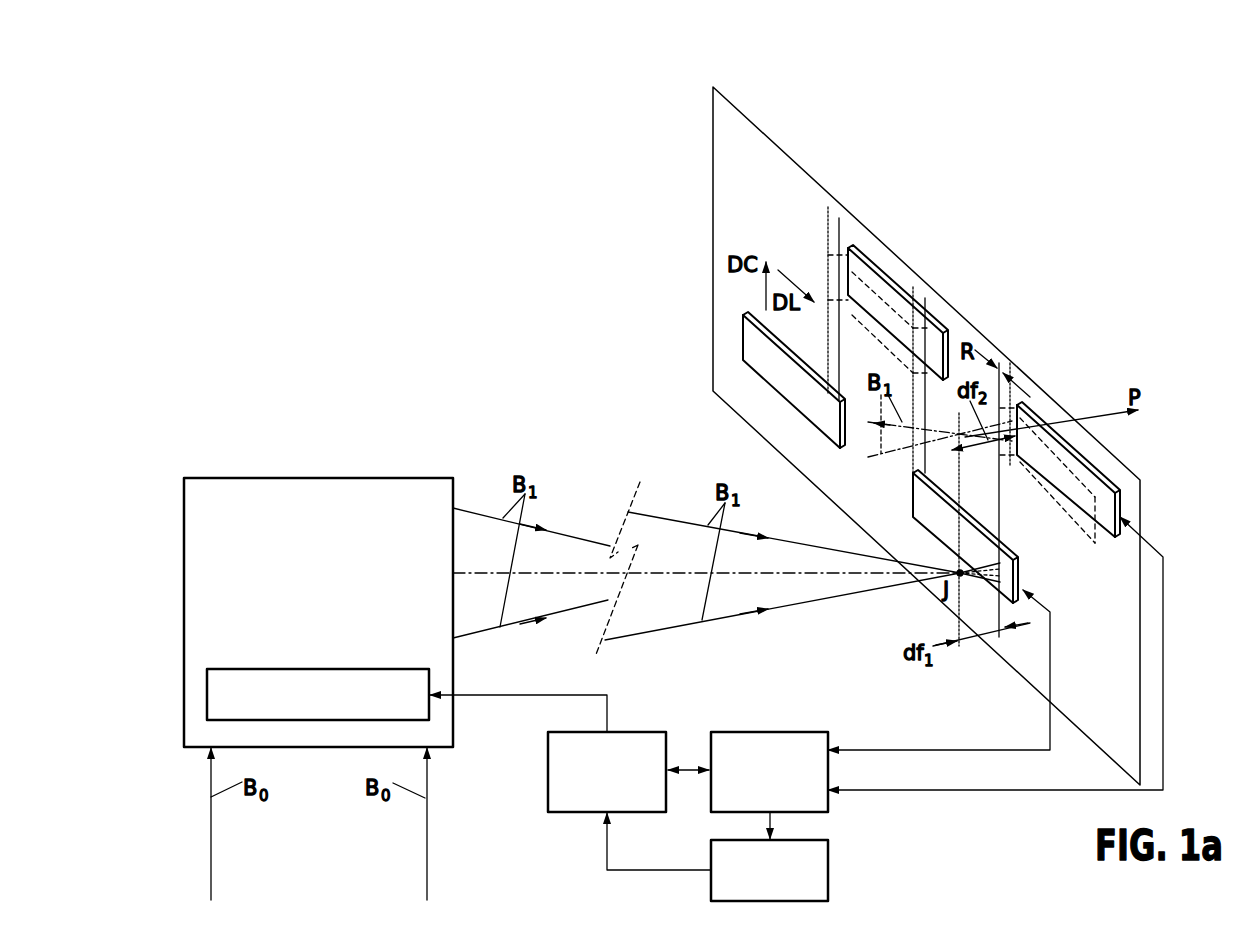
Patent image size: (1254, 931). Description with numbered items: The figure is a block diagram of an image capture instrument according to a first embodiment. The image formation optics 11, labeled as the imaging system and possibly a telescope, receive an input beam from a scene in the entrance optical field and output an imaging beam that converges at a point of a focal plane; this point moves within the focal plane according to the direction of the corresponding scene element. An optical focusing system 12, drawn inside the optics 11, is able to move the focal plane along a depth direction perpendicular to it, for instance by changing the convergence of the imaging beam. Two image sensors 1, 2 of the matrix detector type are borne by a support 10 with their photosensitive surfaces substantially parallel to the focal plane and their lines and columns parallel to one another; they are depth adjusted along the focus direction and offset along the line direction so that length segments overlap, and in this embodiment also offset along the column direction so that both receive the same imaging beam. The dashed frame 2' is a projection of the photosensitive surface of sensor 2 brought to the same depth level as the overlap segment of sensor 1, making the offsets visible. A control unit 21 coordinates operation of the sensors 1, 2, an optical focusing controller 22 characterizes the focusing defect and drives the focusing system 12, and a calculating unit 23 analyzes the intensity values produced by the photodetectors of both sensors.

The image sensor 1 is at (927, 530).
The image sensor 2 is at (1068, 500).
The projection of the photosensitive surface of sensor 2 2' is at (1047, 496).
The support 10 is at (793, 160).
The image formation optics 11 is at (218, 477).
The optical focusing system 12 is at (238, 668).
The control unit 21 is at (803, 731).
The optical focusing controller 22 is at (645, 731).
The calculating unit 23 is at (828, 855).